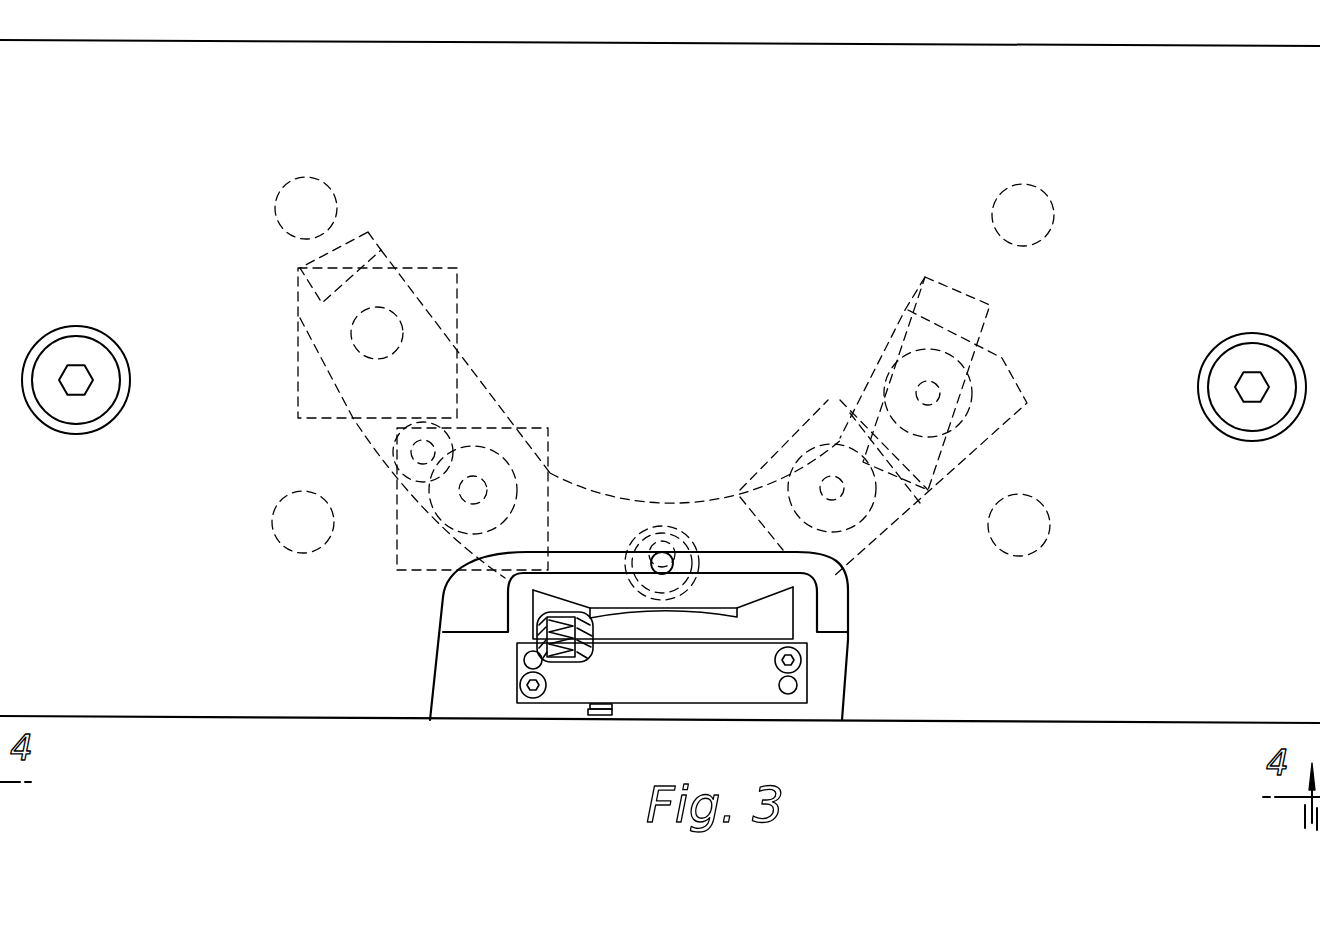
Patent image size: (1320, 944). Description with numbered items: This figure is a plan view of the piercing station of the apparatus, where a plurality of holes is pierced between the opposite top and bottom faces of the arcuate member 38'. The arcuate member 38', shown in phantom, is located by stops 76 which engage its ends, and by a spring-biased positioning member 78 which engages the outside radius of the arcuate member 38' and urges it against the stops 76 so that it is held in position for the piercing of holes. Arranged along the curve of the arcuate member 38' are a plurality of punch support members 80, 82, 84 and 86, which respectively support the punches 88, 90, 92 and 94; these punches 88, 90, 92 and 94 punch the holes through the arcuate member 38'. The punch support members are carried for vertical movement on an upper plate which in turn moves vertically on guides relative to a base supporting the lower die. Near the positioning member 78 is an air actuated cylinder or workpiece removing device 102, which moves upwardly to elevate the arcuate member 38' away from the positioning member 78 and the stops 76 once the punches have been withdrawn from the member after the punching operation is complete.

The arcuate member 38' is at (715, 469).
The stops 76 is at (377, 242).
The spring-biased positioning member 78 is at (540, 598).
The punch support member 80 is at (457, 328).
The punch support member 82 is at (550, 428).
The punch support member 84 is at (740, 473).
The punch support member 86 is at (857, 383).
The punch 88 is at (365, 337).
The punch 90 is at (475, 480).
The punch 92 is at (825, 480).
The punch 94 is at (937, 392).
The air actuated cylinder or workpiece removing device 102 is at (662, 527).